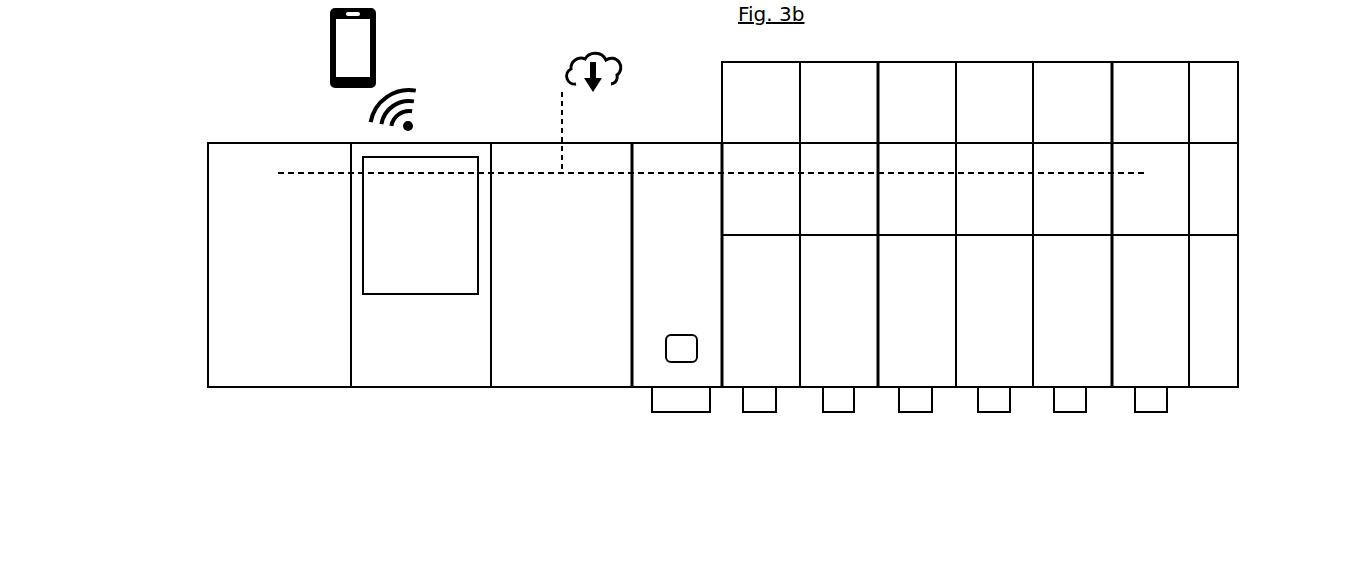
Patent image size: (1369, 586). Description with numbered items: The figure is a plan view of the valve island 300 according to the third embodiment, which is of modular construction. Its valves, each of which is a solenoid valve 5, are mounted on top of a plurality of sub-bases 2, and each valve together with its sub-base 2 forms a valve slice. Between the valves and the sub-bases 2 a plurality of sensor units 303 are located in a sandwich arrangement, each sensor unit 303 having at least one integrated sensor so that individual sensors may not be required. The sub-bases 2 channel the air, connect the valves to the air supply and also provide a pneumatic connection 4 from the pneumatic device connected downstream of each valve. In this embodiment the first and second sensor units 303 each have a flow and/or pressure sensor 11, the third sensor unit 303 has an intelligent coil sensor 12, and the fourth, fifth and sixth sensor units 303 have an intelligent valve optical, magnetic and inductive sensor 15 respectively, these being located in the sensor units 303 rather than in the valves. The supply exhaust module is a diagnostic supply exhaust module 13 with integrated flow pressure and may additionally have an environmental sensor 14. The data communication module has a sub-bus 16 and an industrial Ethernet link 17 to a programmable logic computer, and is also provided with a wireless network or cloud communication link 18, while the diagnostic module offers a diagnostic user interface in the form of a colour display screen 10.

The sub-base 2 is at (753, 193).
The pneumatic connection 4 is at (973, 431).
The solenoid valve 5 is at (1027, 107).
The colour display screen 10 is at (395, 318).
The flow and/or pressure sensor 11 is at (1200, 268).
The intelligent coil sensor 12 is at (998, 260).
The diagnostic supply exhaust module 13 is at (593, 334).
The environmental sensor 14 is at (736, 421).
The intelligent valve sensor 15 is at (879, 287).
The sub-bus 16 is at (625, 121).
The industrial Ethernet link 17 is at (521, 94).
The wireless network / cloud communication link 18 is at (276, 65).
The valve island 300 is at (303, 497).
The sensor unit 303 is at (1034, 170).